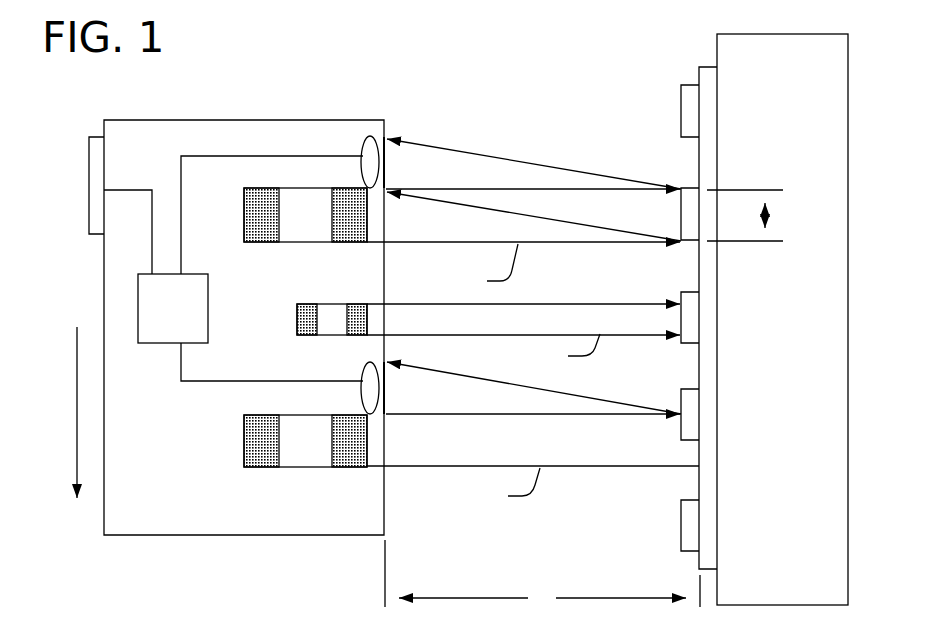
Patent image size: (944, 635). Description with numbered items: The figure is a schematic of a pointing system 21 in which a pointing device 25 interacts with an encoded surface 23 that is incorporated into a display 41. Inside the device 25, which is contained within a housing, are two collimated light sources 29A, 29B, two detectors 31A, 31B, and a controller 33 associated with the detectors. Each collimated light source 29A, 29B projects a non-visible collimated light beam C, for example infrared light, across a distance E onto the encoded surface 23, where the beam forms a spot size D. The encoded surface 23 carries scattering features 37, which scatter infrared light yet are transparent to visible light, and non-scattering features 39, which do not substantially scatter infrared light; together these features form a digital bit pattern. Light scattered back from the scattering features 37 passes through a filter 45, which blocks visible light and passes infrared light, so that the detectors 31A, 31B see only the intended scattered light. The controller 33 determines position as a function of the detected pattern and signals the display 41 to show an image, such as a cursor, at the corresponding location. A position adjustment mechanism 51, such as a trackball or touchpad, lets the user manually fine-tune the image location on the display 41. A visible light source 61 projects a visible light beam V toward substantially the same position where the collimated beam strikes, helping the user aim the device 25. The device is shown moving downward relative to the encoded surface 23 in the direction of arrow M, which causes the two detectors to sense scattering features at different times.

The pointing system 21 is at (464, 62).
The encoded surface 23 is at (705, 363).
The pointing device 25 is at (155, 114).
The collimated light source 29A is at (310, 243).
The collimated light source 29B is at (305, 468).
The detector 31A is at (364, 138).
The detector 31B is at (362, 394).
The controller 33 is at (233, 268).
The scattering feature 37 is at (681, 112).
The non-scattering feature 39 is at (699, 168).
The display 41 is at (782, 319).
The filter 45 is at (373, 136).
The position adjustment mechanism 51 is at (89, 170).
The visible light source 61 is at (296, 335).